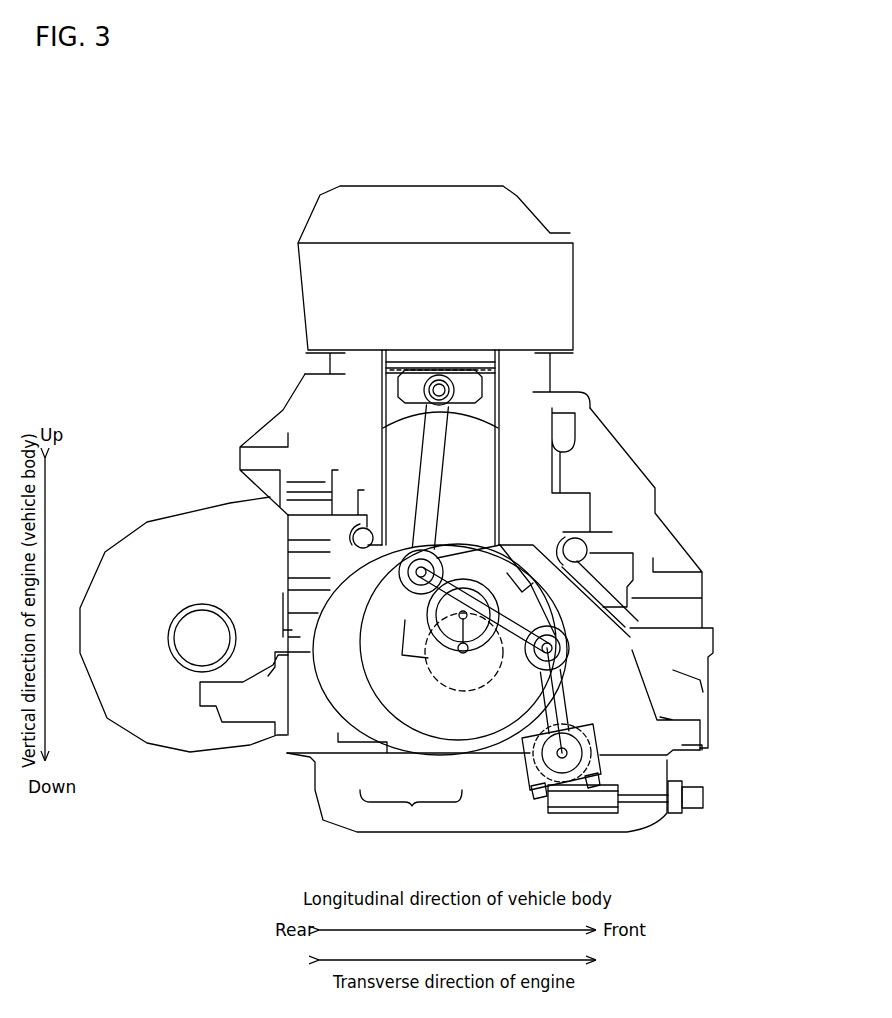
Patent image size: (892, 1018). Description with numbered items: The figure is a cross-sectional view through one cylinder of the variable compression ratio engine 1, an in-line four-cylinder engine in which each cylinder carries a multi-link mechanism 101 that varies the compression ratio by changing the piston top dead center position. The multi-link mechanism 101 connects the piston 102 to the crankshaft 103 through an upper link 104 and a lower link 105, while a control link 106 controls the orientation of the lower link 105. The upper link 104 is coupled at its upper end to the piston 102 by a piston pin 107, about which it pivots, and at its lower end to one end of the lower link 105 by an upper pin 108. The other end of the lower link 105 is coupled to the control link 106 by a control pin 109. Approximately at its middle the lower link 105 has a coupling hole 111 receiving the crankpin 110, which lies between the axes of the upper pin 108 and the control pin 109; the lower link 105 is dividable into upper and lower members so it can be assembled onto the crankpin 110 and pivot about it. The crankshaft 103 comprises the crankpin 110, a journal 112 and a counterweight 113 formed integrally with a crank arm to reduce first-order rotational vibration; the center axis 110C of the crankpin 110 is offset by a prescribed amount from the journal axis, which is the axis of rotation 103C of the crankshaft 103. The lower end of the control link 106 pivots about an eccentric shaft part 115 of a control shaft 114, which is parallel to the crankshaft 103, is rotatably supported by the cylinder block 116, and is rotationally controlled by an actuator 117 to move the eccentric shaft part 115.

The variable compression ratio engine 1 is at (639, 189).
The multi-link mechanism 101 is at (527, 518).
The piston 102 is at (487, 390).
The crankshaft 103 is at (418, 827).
The axis of rotation of the crankshaft 103C is at (458, 655).
The upper link 104 is at (427, 448).
The lower link 105 is at (481, 730).
The control link 106 is at (540, 700).
The piston pin 107 is at (439, 385).
The upper pin 108 is at (415, 565).
The control pin 109 is at (555, 640).
The crankpin 110 is at (420, 737).
The center axis of the crankpin 110C is at (463, 585).
The coupling hole 111 is at (437, 608).
The journal 112 is at (470, 735).
The counterweight 113 is at (418, 745).
The control shaft 114 is at (598, 760).
The eccentric shaft part 115 is at (562, 765).
The cylinder block 116 is at (697, 703).
The actuator 117 is at (693, 802).